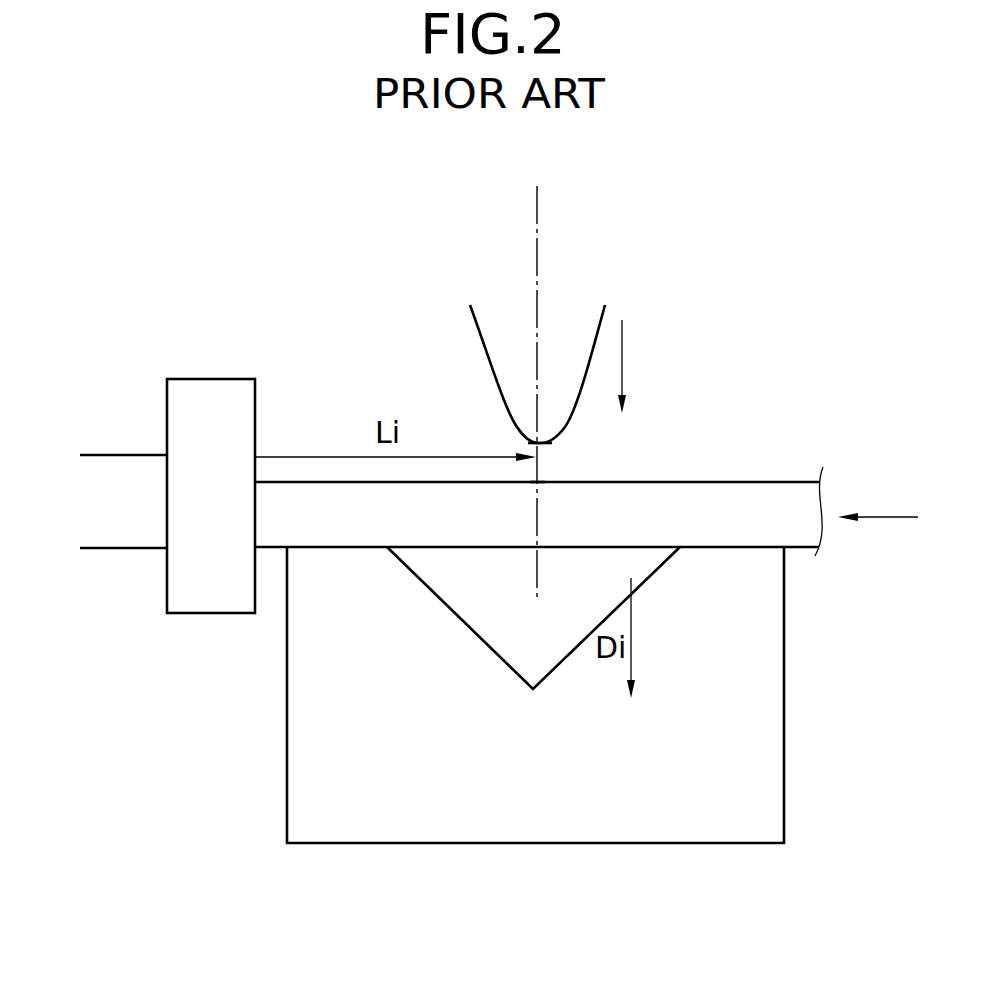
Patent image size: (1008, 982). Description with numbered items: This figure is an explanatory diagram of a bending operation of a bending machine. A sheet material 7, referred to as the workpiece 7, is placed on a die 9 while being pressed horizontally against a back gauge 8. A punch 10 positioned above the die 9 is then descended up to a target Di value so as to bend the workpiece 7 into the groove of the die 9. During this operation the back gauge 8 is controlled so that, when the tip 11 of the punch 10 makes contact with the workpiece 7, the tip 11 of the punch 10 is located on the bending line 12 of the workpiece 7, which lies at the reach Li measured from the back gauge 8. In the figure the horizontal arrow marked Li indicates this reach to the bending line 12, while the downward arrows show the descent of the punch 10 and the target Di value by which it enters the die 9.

The sheet material (workpiece) 7 is at (718, 488).
The back gauge 8 is at (237, 378).
The die 9 is at (772, 798).
The punch 10 is at (563, 302).
The tip of the punch 11 is at (565, 427).
The bending line 12 is at (540, 490).